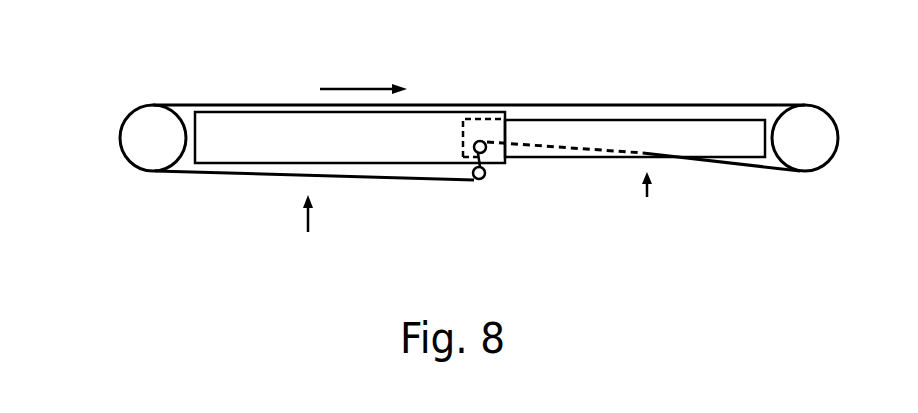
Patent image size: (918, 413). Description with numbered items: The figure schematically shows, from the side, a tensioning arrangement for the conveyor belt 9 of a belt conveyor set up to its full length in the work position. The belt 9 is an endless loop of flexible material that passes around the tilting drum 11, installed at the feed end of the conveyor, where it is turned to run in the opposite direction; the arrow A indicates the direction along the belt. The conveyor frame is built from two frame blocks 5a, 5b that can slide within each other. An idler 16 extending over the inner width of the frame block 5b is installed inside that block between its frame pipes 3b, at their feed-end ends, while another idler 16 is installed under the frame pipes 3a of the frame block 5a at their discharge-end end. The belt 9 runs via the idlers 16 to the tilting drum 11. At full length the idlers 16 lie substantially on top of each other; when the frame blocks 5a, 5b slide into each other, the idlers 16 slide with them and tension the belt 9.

The frame pipe 3a is at (212, 123).
The frame pipe 3b is at (713, 130).
The conveyor belt 9 is at (478, 103).
The tilting drum 11 is at (143, 142).
The idler 16 is at (473, 182).
The frame block 5a is at (306, 234).
The frame block 5b is at (656, 214).
The transport direction A is at (363, 72).